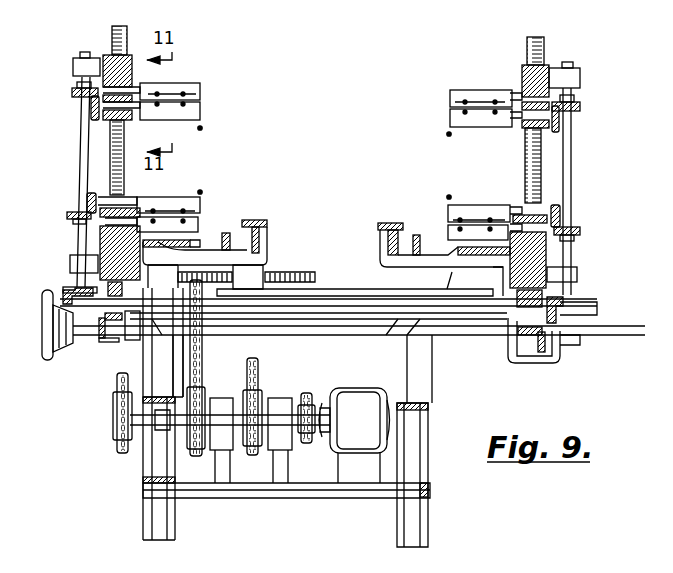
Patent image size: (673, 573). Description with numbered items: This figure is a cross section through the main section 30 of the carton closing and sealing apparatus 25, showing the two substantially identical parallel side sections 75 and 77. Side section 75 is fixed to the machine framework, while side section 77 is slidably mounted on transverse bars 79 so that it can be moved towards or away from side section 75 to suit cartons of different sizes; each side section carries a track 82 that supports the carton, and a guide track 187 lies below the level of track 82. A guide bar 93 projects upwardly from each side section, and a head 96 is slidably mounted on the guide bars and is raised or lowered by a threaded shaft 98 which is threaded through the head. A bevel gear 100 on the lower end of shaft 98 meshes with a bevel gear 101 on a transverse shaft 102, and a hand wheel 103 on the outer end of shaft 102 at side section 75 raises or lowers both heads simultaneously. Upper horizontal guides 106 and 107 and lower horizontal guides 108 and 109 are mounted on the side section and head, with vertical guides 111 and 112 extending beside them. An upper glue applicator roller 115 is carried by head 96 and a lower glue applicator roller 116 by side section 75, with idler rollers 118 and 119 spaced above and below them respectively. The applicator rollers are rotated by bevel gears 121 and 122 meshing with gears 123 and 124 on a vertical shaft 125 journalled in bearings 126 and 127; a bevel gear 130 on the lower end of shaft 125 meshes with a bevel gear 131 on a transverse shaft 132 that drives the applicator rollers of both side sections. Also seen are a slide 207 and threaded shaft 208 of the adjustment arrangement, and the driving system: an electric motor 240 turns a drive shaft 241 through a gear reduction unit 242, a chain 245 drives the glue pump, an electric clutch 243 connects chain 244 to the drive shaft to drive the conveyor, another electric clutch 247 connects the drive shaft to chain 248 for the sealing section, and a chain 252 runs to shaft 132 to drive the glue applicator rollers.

The apparatus 25 is at (348, 66).
The main section 30 is at (598, 66).
The side section 75 is at (220, 146).
The side section 77 is at (436, 151).
The transverse bars 79 is at (596, 305).
The tracks 82 is at (268, 224).
The guide bar 93 is at (127, 32).
The head 96 is at (103, 58).
The threaded shaft 98 is at (110, 154).
The bevel gear 100 is at (114, 340).
The bevel gear 101 is at (100, 341).
The transverse shaft 102 is at (302, 336).
The hand wheel 103 is at (44, 330).
The upper horizontal guide 106 is at (187, 94).
The upper horizontal guide 107 is at (190, 105).
The lower horizontal guide 108 is at (190, 205).
The lower horizontal guide 109 is at (190, 220).
The vertical guide 111 is at (203, 128).
The vertical guide 112 is at (203, 191).
The upper glue applicator roller 115 is at (153, 120).
The lower glue applicator roller 116 is at (153, 197).
The idler roller 118 is at (165, 83).
The idler roller 119 is at (102, 240).
The bevel gear 121 is at (89, 110).
The bevel gear 122 is at (86, 198).
The gear 123 is at (72, 94).
The gear 124 is at (66, 215).
The vertical shaft 125 is at (78, 134).
The bearing 126 is at (74, 69).
The bearing 127 is at (69, 262).
The bevel gear 130 is at (63, 288).
The bevel gear 131 is at (44, 301).
The transverse shaft 132 is at (386, 305).
The guide track 187 is at (417, 235).
The slide 207 is at (362, 283).
The threaded shaft 208 is at (287, 272).
The electric motor 240 is at (344, 390).
The drive shaft 241 is at (340, 413).
The gear reduction unit 242 is at (372, 466).
The electric clutch 243 is at (289, 458).
The chain 244 is at (258, 370).
The chain 245 is at (310, 393).
The electric clutch 247 is at (226, 458).
The chain 248 is at (116, 381).
The chain 252 is at (207, 350).